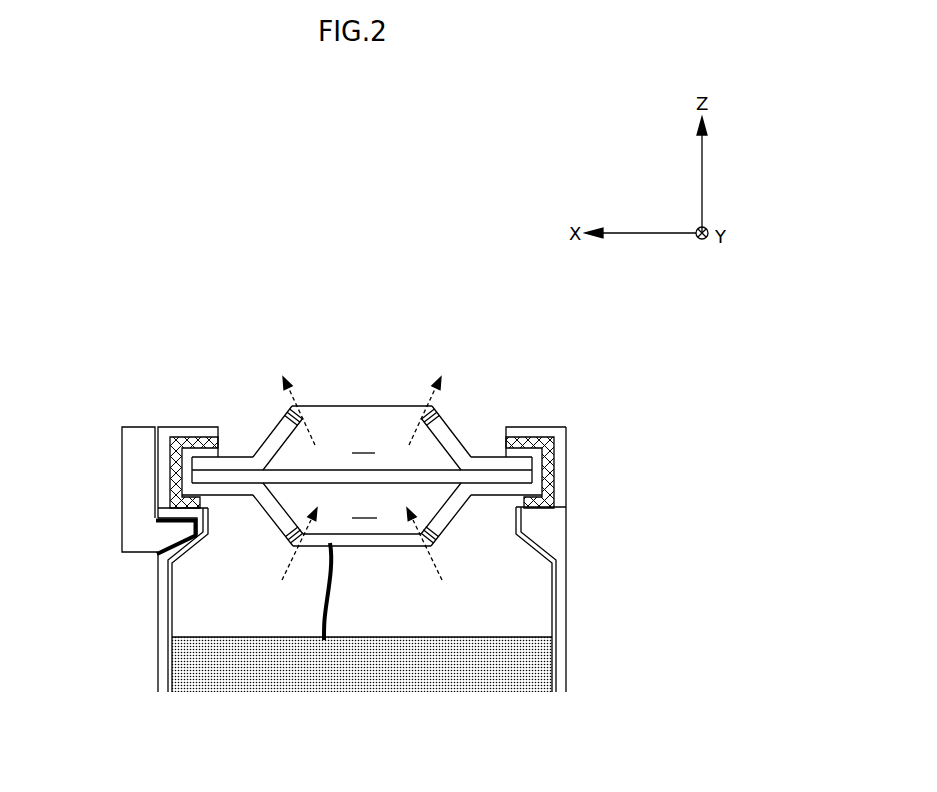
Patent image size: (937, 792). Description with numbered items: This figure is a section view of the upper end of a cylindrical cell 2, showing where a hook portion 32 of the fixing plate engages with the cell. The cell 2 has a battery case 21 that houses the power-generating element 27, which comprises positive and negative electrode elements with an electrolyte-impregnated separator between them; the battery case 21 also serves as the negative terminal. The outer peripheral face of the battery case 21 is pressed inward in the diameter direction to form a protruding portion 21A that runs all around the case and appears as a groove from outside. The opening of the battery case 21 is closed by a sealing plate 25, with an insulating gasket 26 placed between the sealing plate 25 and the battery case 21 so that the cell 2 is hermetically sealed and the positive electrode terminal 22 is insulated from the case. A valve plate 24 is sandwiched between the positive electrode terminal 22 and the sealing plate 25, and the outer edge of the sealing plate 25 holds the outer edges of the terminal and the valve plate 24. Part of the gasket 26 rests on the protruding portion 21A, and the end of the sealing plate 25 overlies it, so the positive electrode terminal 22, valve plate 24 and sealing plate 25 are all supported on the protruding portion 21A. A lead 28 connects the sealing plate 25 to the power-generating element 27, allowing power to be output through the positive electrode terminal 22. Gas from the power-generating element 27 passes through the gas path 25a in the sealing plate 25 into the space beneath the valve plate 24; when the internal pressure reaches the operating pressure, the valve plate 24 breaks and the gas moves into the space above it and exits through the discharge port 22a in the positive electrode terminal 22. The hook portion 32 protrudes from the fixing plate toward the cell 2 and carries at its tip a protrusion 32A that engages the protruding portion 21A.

The cell 2 is at (571, 388).
The battery case 21 is at (158, 603).
The protruding portion 21A is at (168, 514).
The positive electrode terminal 22 is at (354, 405).
The discharge port 22a is at (285, 416).
The valve plate 24 is at (347, 476).
The sealing plate 25 is at (391, 546).
The gas path 25a is at (290, 540).
The gasket 26 is at (180, 440).
The power-generating element 27 is at (455, 672).
The lead 28 is at (323, 605).
The hook portion 32 is at (137, 453).
The protrusion 32A is at (182, 527).